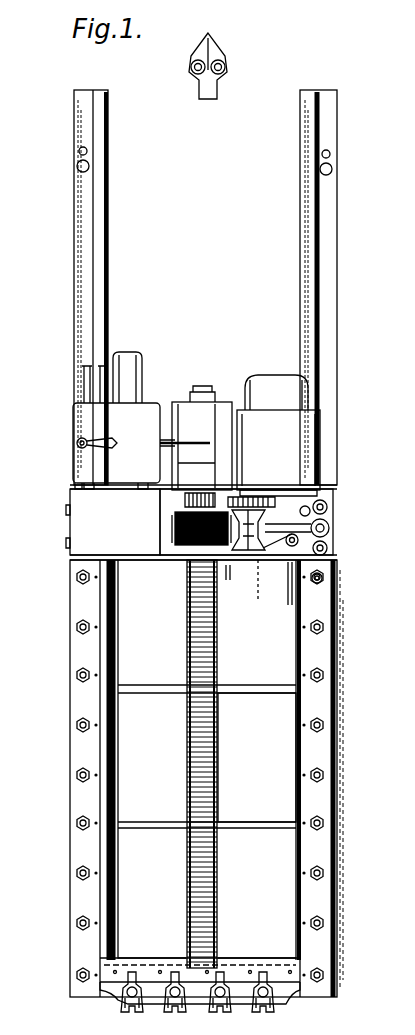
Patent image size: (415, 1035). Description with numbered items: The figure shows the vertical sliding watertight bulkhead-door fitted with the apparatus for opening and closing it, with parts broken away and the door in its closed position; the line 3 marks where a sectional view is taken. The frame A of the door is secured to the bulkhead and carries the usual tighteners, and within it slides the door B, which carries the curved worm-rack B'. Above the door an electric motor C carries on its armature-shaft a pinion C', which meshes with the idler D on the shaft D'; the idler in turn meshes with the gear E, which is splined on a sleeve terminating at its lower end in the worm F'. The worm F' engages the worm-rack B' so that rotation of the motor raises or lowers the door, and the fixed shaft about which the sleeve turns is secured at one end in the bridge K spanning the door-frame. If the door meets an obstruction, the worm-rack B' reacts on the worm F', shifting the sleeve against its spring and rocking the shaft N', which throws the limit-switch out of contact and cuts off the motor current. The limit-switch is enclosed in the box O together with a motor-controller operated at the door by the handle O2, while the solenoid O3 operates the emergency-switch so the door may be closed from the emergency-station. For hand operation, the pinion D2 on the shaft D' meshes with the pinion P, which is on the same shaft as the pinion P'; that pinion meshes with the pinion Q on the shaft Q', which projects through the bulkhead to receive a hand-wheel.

The frame of the door A is at (312, 755).
The door B is at (257, 757).
The curved worm-rack B' is at (219, 764).
The electric motor C is at (298, 432).
The pinion C' is at (278, 479).
The idler D is at (251, 498).
The shaft D' is at (250, 590).
The pinion D2 is at (232, 562).
The gear E is at (113, 522).
The worm F' is at (173, 519).
The bridge K is at (178, 404).
The rock-shaft N' is at (202, 438).
The box O is at (124, 446).
The handle O2 is at (92, 441).
The solenoid O3 is at (138, 366).
The pinion P is at (275, 583).
The pinion P' is at (335, 582).
The pinion Q is at (315, 533).
The shaft Q' is at (331, 526).
The section line 3 is at (172, 356).